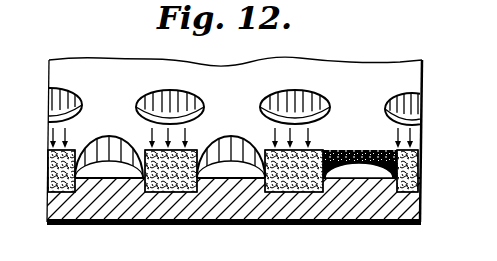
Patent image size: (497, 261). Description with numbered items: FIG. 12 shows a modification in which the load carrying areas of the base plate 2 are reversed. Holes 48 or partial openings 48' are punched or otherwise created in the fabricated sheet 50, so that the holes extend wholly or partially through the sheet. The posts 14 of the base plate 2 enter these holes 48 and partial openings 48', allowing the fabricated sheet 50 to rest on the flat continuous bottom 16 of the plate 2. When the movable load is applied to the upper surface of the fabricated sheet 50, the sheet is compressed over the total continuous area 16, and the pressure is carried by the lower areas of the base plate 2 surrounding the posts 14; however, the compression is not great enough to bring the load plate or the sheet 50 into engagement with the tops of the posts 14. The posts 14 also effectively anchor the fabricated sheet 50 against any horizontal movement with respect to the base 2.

The base plate 2 is at (56, 224).
The posts 14 is at (160, 117).
The flat continuous bottom 16 is at (170, 192).
The holes 48 is at (228, 103).
The partial openings 48' is at (401, 164).
The fabricated sheet 50 is at (282, 72).